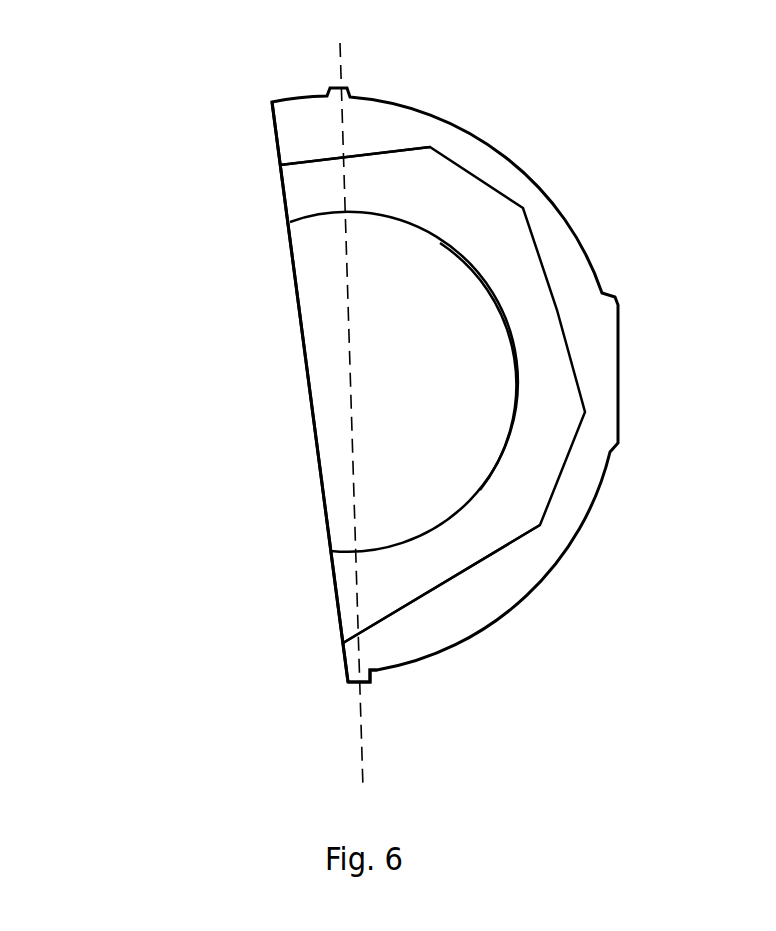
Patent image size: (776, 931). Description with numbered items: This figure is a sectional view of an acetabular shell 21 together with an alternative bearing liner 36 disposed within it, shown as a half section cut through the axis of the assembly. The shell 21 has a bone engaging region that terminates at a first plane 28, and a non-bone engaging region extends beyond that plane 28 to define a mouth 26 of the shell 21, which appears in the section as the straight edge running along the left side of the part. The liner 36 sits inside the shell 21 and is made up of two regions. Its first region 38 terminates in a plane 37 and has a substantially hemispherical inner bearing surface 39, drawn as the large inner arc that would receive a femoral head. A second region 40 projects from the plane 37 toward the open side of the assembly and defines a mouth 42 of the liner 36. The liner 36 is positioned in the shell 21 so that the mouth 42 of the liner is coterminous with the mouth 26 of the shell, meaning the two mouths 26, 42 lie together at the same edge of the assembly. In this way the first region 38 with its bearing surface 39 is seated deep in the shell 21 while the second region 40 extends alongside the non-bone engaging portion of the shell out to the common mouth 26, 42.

The acetabular shell 21 is at (622, 250).
The mouth of the shell 26 is at (271, 138).
The first plane 28 is at (362, 740).
The liner 36 is at (513, 522).
The plane 37 is at (362, 720).
The first region 38 is at (560, 405).
The inner bearing surface 39 is at (481, 280).
The second region 40 is at (317, 187).
The mouth of the liner 42 is at (279, 209).